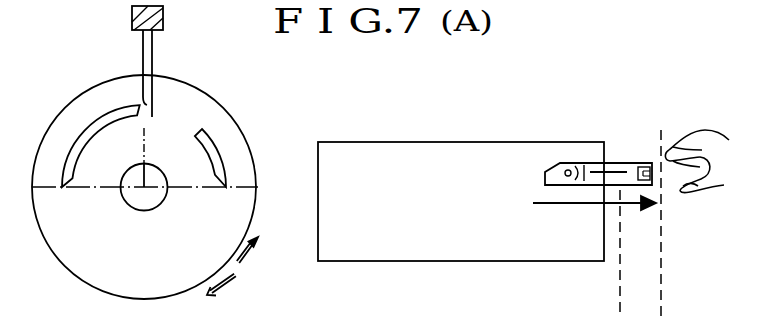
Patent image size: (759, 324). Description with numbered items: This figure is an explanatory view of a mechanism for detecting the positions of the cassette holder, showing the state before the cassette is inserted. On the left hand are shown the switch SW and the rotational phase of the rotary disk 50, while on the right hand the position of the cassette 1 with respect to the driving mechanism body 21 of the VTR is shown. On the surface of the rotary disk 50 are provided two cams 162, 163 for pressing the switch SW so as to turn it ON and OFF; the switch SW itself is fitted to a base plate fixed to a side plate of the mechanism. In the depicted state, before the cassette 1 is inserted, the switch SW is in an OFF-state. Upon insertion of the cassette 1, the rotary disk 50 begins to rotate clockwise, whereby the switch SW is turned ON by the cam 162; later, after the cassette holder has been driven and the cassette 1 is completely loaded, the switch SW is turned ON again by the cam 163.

The cassette 1 is at (622, 172).
The driving mechanism body 21 is at (485, 261).
The rotary disk 50 is at (103, 263).
The cam 162 is at (83, 137).
The cam 163 is at (213, 157).
The switch SW is at (132, 16).